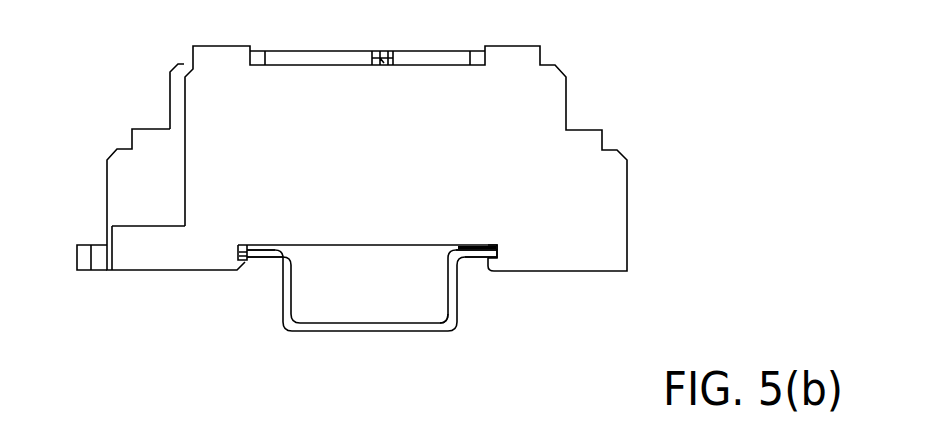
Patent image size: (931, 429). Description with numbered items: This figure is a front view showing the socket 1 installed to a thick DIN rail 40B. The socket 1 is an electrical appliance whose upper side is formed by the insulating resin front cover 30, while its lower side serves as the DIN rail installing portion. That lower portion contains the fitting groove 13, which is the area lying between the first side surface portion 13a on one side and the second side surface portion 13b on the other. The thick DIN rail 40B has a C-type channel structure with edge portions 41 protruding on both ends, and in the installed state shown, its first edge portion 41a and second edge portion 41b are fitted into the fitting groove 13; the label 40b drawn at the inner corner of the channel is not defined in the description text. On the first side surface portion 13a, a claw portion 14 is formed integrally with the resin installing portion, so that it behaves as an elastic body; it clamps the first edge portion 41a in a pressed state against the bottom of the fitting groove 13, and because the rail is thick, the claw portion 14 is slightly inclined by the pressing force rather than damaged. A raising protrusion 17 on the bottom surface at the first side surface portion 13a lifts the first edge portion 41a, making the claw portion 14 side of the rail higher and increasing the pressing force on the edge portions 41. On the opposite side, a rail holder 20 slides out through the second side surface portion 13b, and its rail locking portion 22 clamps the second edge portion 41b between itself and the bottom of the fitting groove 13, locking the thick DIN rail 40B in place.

The socket 1 is at (328, 207).
The front cover 30 is at (567, 95).
The rail holder 20 is at (77, 258).
The fitting groove 13 is at (369, 246).
The first side surface portion 13a is at (491, 246).
The second side surface portion 13b is at (248, 245).
The raising protrusion 17 is at (454, 251).
The rail locking portion 22 is at (246, 260).
The claw portion 14 is at (490, 266).
The thick DIN rail 40B is at (372, 315).
The bottom portion of metal fitting 40b is at (447, 323).
The edge portions 41 is at (372, 315).
The first edge portion 41a is at (477, 255).
The second edge portion 41b is at (268, 255).